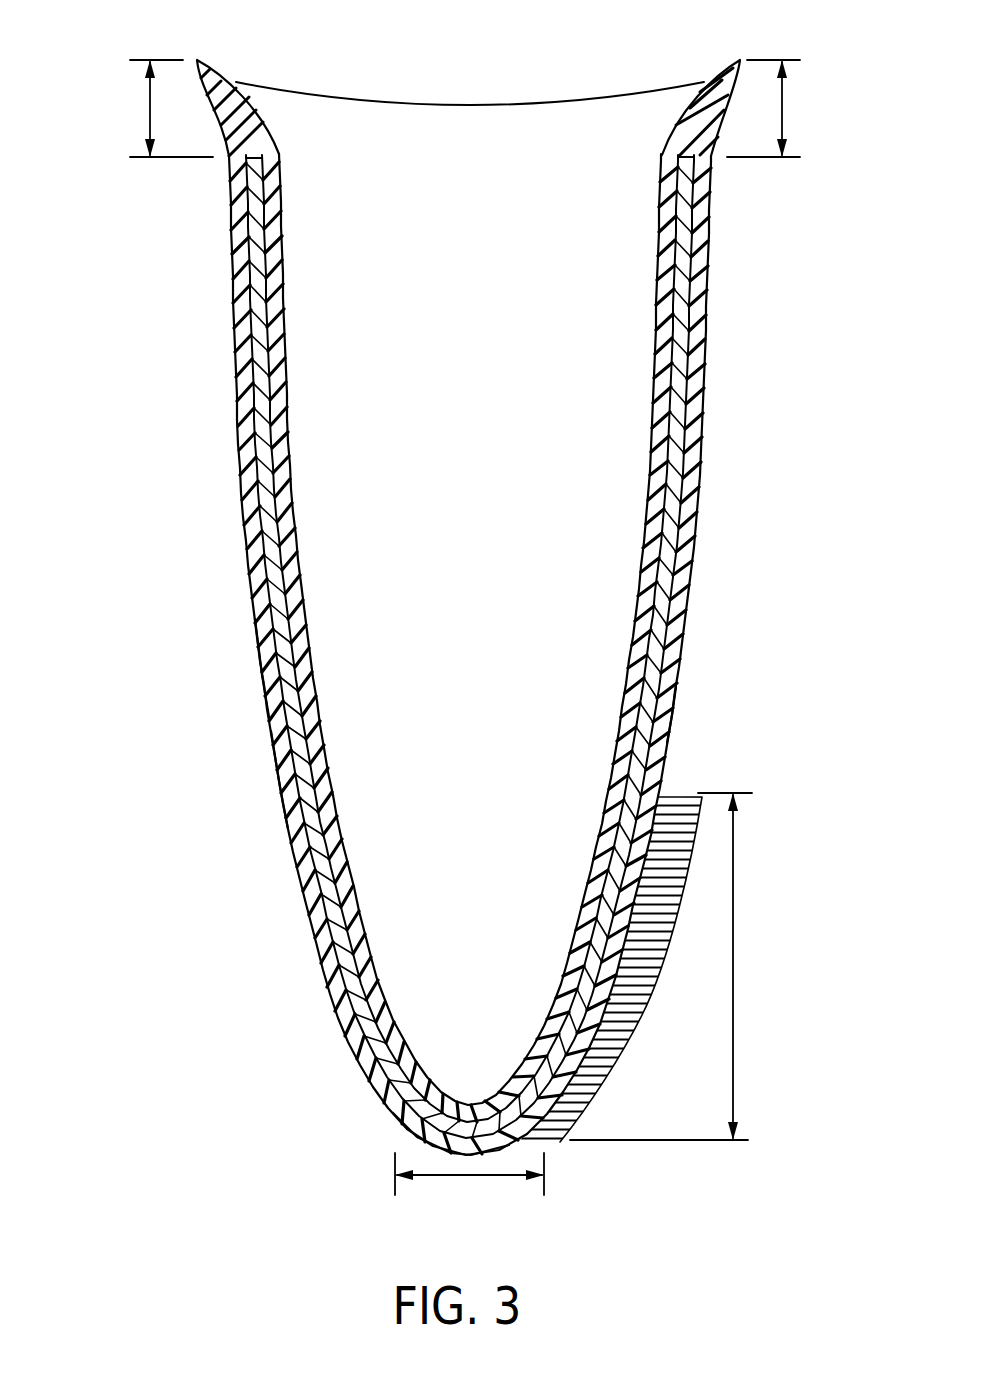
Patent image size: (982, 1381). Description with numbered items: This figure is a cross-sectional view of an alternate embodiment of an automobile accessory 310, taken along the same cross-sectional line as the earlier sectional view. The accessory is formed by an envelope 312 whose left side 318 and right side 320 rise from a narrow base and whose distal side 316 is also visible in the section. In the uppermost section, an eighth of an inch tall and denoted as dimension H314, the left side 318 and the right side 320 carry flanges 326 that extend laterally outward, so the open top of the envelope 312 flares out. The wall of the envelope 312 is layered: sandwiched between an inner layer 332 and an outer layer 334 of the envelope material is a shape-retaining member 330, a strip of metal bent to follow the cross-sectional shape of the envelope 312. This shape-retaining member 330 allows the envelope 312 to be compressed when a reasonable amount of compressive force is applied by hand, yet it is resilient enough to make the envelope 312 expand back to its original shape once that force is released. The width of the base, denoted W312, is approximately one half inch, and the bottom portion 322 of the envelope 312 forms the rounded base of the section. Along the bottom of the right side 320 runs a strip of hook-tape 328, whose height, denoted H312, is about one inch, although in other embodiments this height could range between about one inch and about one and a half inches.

The automobile accessory 310 is at (128, 430).
The envelope 312 is at (262, 667).
The distal side 316 is at (428, 102).
The left side 318 is at (283, 777).
The right side 320 is at (670, 720).
The bottom portion 322 is at (380, 1078).
The flanges 326 is at (230, 77).
The hook-tape 328 is at (627, 1013).
The shape-retaining member 330 is at (668, 573).
The inner layer 332 is at (636, 690).
The outer layer 334 is at (695, 442).
The uppermost section height dimension H314 is at (143, 100).
The hook-tape height dimension H312 is at (736, 960).
The base width dimension W312 is at (478, 1178).